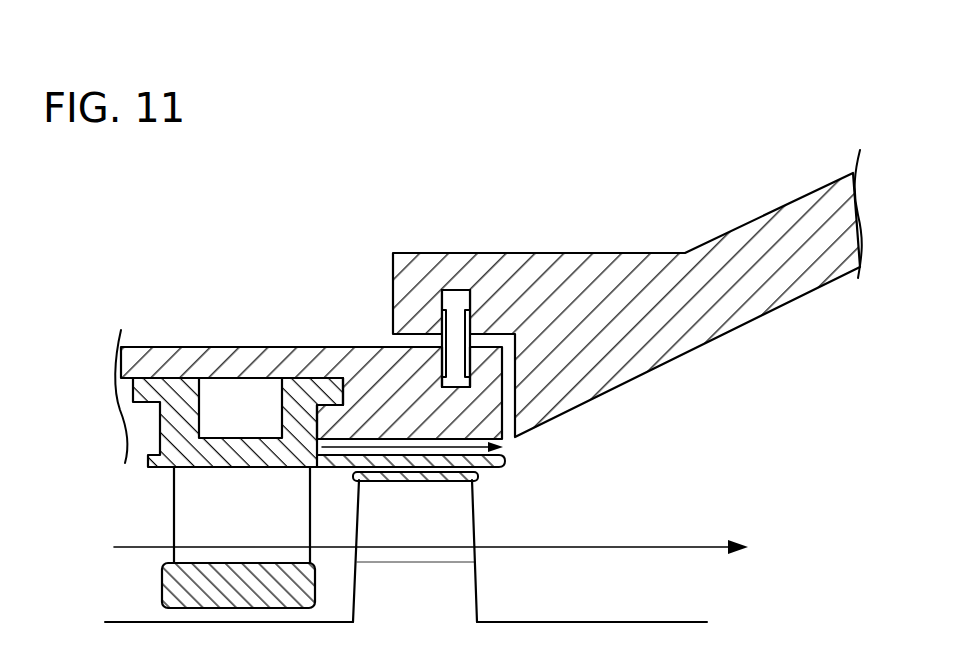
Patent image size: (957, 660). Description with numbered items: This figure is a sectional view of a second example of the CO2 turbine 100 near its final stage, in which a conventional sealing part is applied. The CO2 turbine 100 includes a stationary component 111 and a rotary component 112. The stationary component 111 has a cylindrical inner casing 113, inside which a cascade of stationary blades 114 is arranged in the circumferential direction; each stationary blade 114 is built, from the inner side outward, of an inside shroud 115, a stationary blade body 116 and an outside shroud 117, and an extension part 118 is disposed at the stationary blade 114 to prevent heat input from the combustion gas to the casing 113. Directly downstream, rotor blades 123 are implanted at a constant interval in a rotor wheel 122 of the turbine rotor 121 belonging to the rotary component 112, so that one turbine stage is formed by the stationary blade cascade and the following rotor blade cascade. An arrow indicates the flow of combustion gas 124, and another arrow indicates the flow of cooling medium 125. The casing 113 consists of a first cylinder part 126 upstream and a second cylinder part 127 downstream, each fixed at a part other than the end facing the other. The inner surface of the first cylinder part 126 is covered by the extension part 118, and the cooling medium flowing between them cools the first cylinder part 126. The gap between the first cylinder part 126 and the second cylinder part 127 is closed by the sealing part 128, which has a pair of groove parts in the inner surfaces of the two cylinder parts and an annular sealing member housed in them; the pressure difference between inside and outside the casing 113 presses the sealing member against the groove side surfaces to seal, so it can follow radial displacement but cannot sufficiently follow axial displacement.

The CO2 turbine 100 is at (163, 262).
The stationary component 111 is at (770, 367).
The rotary component 112 is at (770, 620).
The inner casing 113 is at (81, 346).
The stationary blade 114 is at (166, 527).
The inside shroud 115 is at (186, 582).
The stationary blade body 116 is at (186, 498).
The outside shroud 117 is at (180, 466).
The extension part 118 is at (505, 463).
The turbine rotor 121 is at (630, 637).
The rotor wheel 122 is at (458, 595).
The rotor blade 123 is at (458, 517).
The flow of combustion gas 124 is at (648, 547).
The flow of cooling medium 125 is at (506, 445).
The first cylinder part 126 is at (250, 366).
The second cylinder part 127 is at (597, 272).
The sealing part 128 is at (484, 316).